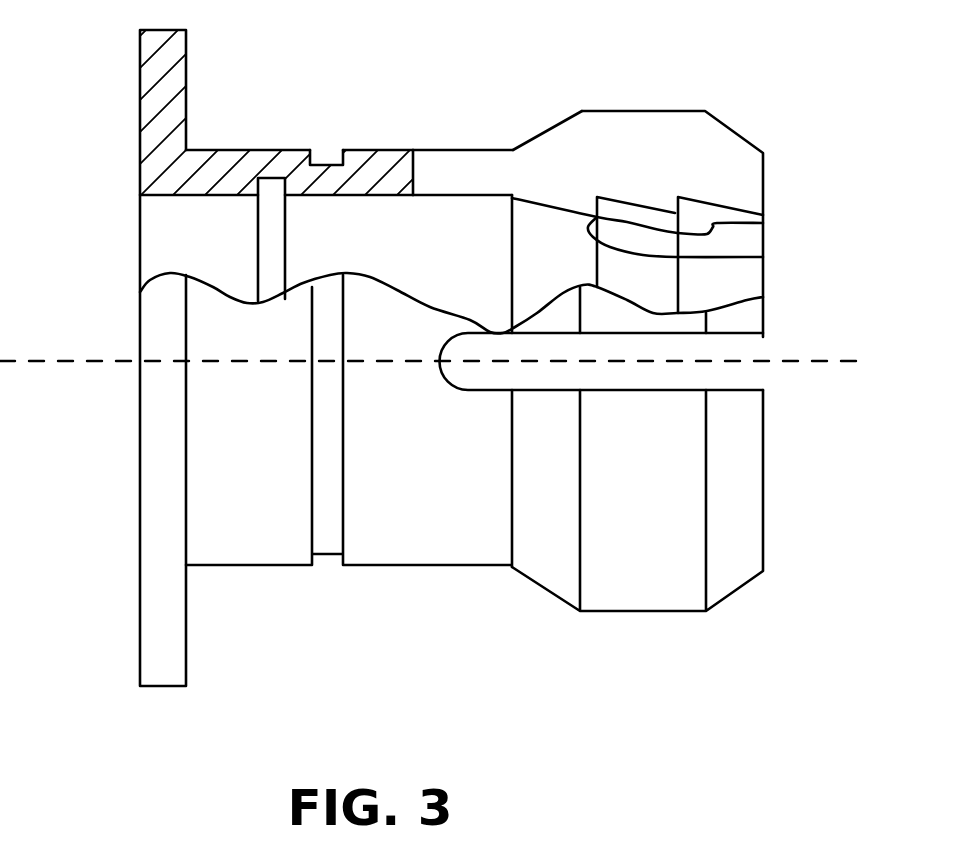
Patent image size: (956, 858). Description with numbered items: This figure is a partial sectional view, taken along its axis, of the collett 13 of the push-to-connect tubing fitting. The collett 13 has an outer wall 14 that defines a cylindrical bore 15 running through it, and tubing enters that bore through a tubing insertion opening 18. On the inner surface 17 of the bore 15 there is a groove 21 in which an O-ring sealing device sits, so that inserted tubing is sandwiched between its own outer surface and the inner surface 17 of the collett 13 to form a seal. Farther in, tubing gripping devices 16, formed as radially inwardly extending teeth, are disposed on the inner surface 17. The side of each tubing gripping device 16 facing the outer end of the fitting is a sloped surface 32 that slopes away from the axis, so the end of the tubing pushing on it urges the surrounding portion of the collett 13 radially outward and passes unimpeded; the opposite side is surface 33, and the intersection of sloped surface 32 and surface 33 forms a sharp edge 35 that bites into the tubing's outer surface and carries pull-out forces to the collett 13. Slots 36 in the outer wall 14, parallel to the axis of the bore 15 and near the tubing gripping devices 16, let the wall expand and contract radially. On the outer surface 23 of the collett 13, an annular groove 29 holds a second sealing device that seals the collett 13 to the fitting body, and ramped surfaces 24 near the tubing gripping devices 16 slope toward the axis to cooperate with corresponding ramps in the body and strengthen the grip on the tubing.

The collett 13 is at (236, 150).
The outer wall 14 is at (207, 168).
The cylindrical bore 15 is at (168, 235).
The tubing gripping devices 16 is at (712, 203).
The inner surface 17 is at (357, 185).
The tubing insertion opening 18 is at (130, 346).
The groove 21 is at (270, 178).
The outer surface 23 is at (397, 155).
The ramped surfaces 24 is at (526, 145).
The annular groove 29 is at (323, 163).
The sloped surface 32 is at (544, 205).
The surface 33 is at (765, 223).
The sharp edge 35 is at (765, 258).
The slots 36 is at (440, 167).